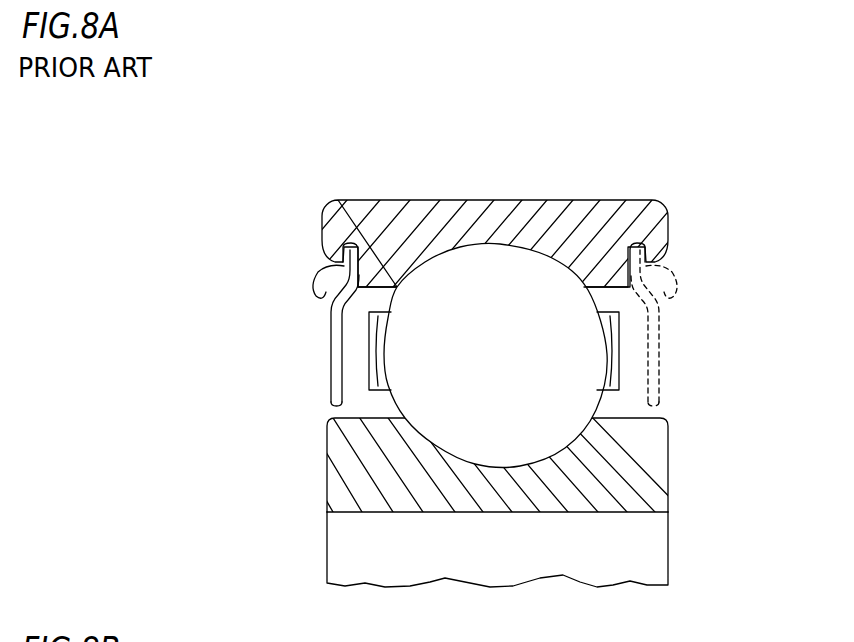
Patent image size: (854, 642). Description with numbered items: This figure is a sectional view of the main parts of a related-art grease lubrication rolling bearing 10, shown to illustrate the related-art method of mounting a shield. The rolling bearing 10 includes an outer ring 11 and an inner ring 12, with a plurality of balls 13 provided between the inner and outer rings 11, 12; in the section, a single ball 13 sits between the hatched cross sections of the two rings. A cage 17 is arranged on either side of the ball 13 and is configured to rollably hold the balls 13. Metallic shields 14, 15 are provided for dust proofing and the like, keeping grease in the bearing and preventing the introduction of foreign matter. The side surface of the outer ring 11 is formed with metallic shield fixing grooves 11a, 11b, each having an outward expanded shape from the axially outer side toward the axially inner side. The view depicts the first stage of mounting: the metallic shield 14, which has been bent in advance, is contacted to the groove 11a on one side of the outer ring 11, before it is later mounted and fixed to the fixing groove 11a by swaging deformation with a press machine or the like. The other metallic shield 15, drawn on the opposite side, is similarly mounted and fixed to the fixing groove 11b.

The rolling bearing 10 is at (711, 199).
The outer ring 11 is at (417, 200).
The metallic shield fixing groove 11a is at (333, 265).
The metallic shield fixing groove 11b is at (665, 268).
The inner ring 12 is at (497, 513).
The ball 13 is at (505, 244).
The metallic shield 14 is at (331, 354).
The metallic shield 15 is at (660, 345).
The cage 17 is at (605, 328).